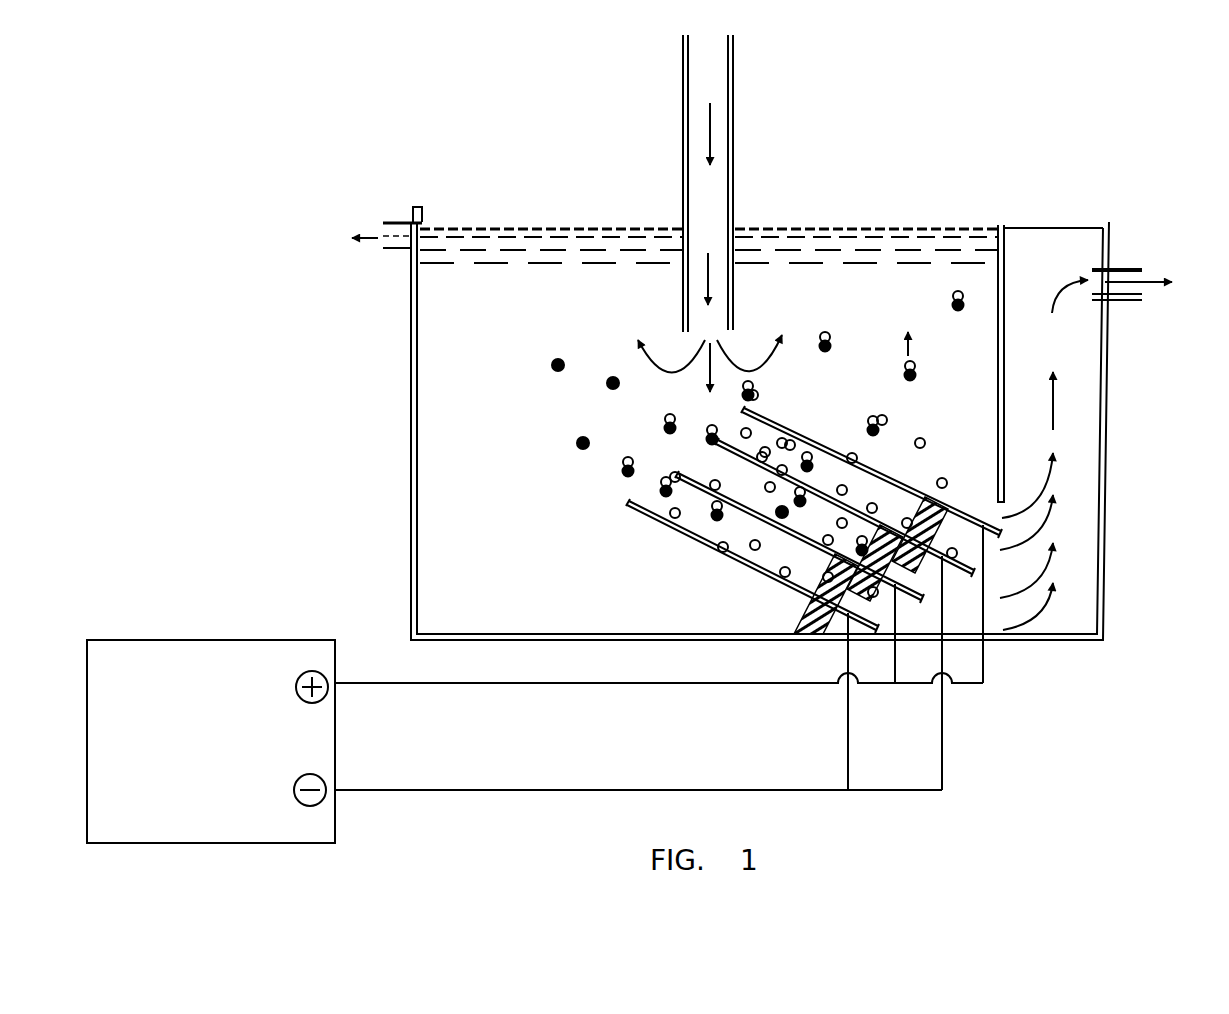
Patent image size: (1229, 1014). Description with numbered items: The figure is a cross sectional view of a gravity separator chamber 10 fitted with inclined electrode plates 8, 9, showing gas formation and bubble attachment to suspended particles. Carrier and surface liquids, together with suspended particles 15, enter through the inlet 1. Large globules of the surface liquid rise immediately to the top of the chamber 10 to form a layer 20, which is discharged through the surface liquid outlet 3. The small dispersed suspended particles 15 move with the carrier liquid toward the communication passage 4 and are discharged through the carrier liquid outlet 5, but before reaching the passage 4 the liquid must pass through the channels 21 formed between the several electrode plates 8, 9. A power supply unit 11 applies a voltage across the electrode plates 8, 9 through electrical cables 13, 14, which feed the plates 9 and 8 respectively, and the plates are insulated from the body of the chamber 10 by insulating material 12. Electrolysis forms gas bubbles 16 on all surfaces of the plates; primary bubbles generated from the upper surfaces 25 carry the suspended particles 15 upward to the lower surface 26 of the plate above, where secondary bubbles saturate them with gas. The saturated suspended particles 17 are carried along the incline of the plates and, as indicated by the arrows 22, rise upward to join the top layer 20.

The inlet 1 is at (712, 190).
The surface liquid outlet 3 is at (378, 241).
The communication passage 4 is at (1000, 562).
The carrier liquid outlet 5 is at (1145, 278).
The electrode plates 8 is at (953, 575).
The electrode plates 9 is at (997, 547).
The gravity separator chamber 10 is at (410, 362).
The power supply unit 11 is at (232, 660).
The insulating material 12 is at (808, 600).
The electrical cable 13 is at (373, 686).
The electrical cable 14 is at (363, 790).
The suspended particles 15 is at (609, 376).
The gas bubbles 16 is at (750, 550).
The saturated suspended particles 17 is at (664, 494).
The layer 20 is at (503, 222).
The channels 21 is at (783, 553).
The arrows 22 is at (905, 345).
The upper surfaces 25 is at (913, 480).
The lower surface 26 is at (905, 506).